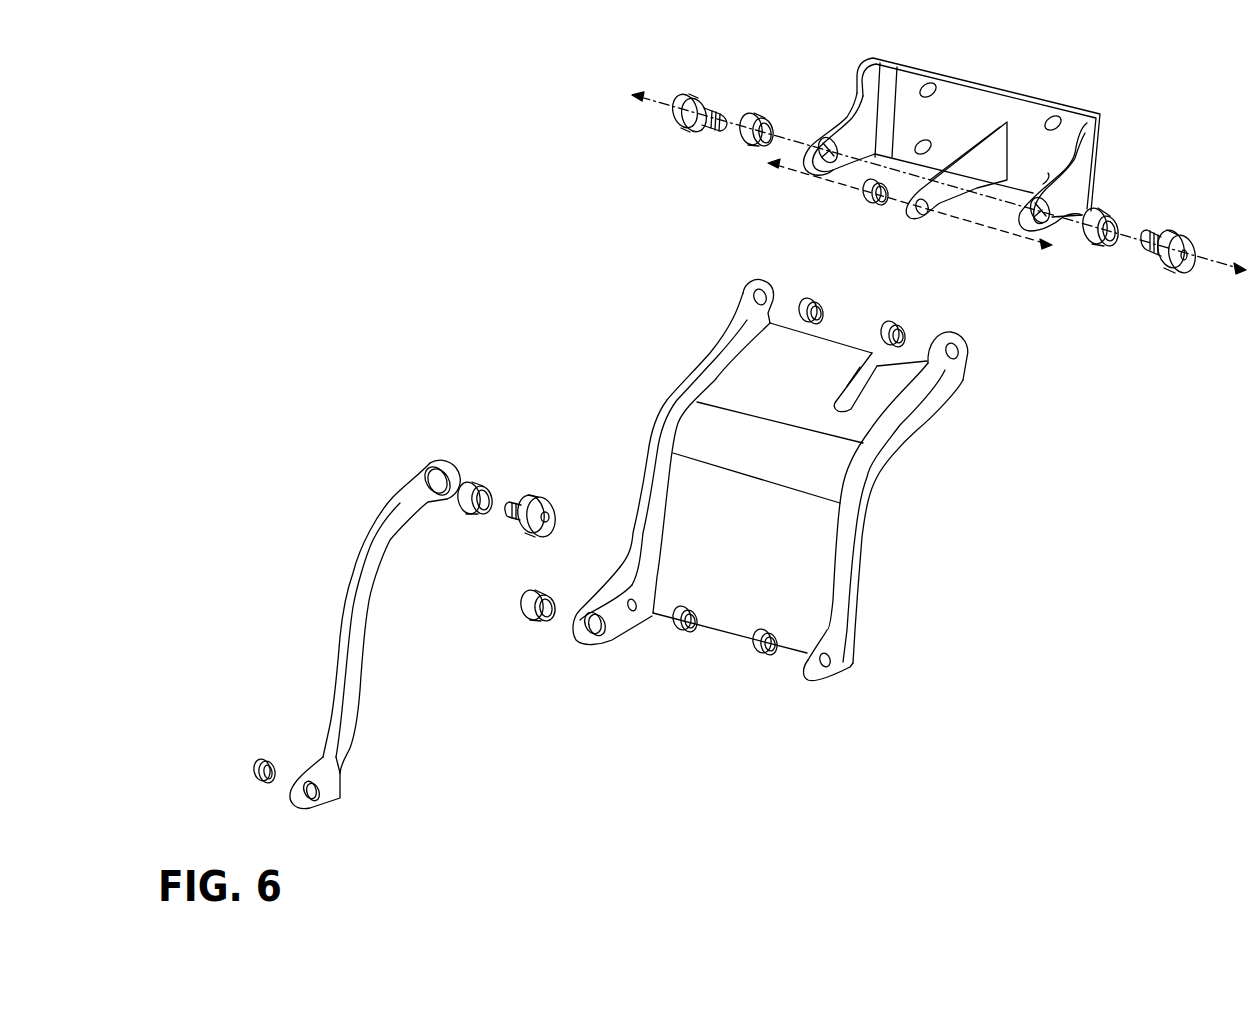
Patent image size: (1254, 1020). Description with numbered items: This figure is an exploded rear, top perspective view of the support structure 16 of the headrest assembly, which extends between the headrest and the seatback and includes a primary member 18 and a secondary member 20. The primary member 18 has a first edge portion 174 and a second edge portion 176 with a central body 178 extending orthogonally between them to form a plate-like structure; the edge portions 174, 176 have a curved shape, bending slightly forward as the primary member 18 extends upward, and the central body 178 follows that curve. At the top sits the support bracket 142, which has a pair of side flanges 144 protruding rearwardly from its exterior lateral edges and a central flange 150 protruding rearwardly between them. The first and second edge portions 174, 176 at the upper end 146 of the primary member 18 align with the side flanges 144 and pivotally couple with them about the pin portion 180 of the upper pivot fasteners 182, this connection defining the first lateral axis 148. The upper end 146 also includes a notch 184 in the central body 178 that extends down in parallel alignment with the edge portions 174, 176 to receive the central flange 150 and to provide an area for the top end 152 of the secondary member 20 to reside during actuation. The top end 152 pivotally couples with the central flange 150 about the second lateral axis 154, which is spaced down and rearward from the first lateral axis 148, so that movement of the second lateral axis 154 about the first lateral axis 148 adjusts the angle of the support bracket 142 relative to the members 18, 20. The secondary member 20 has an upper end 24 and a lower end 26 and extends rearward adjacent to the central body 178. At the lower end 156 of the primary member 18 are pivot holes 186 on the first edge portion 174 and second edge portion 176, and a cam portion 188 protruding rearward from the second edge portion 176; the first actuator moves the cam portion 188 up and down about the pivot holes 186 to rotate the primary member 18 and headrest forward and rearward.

The support structure 16 is at (478, 254).
The primary member 18 is at (770, 506).
The secondary member 20 is at (404, 606).
The upper end 24 is at (430, 464).
The lower end 26 is at (335, 792).
The support bracket 142 is at (1025, 125).
The side flanges 144 is at (862, 120).
The upper end 146 is at (958, 400).
The first lateral axis 148 is at (1208, 268).
The central flange 150 is at (984, 158).
The top end 152 is at (362, 526).
The second lateral axis 154 is at (822, 180).
The lower end 156 is at (866, 675).
The first edge portion 174 is at (865, 483).
The second edge portion 176 is at (672, 421).
The central body 178 is at (758, 525).
The pin portion 180 is at (714, 118).
The upper pivot fasteners 182 is at (695, 94).
The notch 184 is at (853, 393).
The pivot holes 186 is at (632, 612).
The cam portion 188 is at (597, 630).